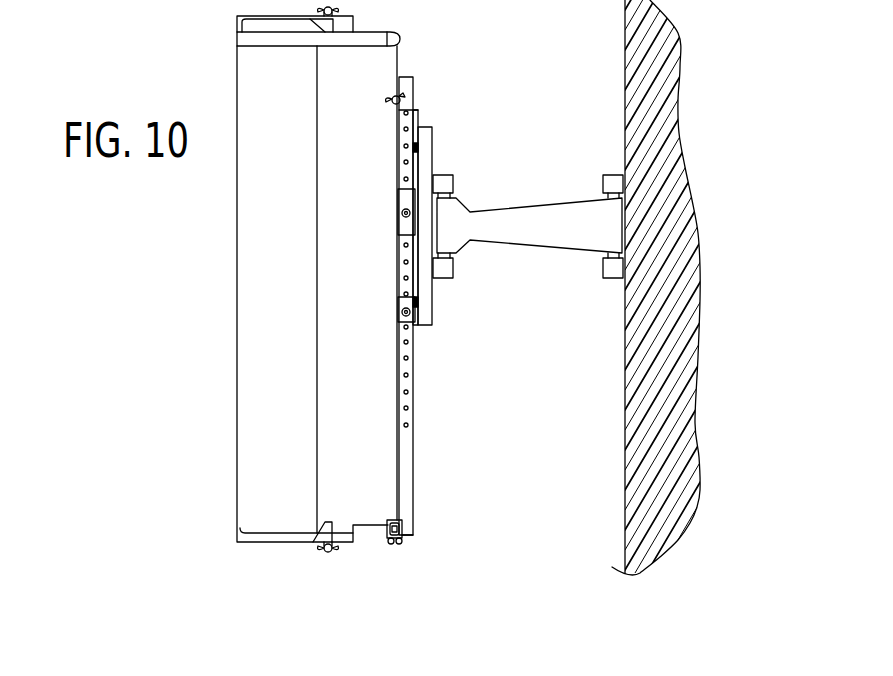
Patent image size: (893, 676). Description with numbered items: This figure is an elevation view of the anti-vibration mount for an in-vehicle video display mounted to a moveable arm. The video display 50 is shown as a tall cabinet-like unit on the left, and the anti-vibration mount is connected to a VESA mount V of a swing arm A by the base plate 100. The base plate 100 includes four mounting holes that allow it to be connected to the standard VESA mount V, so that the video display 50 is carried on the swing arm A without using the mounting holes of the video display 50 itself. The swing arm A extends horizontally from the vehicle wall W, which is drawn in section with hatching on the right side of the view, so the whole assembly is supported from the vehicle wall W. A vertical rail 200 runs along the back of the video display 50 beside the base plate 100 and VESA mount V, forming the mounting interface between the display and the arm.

The video display 50 is at (288, 317).
The base plate 100 is at (417, 117).
The mounting rail 200 is at (413, 485).
The VESA mount V is at (432, 153).
The swing arm A is at (517, 247).
The vehicle wall W is at (665, 245).